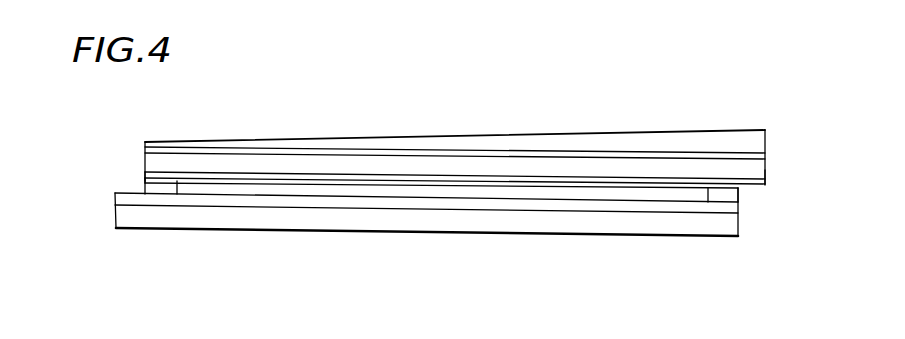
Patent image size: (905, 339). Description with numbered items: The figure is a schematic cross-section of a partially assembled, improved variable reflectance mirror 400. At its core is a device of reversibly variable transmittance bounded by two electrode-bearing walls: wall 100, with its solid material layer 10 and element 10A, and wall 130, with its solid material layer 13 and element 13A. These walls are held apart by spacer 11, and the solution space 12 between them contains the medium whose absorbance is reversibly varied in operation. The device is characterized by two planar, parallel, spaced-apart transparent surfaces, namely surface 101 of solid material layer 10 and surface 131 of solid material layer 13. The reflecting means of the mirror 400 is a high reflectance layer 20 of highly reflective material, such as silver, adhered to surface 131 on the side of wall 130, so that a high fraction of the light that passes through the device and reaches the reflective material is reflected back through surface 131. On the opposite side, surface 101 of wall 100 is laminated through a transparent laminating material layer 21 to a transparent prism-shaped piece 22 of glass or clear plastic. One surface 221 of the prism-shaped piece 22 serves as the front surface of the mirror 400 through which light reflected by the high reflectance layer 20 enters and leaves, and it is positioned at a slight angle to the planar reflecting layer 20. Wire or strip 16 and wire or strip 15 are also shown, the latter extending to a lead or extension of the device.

The variable reflectance mirror 400 is at (520, 248).
The wall 100 is at (130, 150).
The surface of prism-shaped piece 221 is at (765, 130).
The prism-shaped piece 22 is at (766, 142).
The transparent laminating material layer 21 is at (767, 150).
The surface of solid material layer 101 is at (767, 158).
The solid material layer 10 is at (767, 162).
The element of wall 100 10A is at (767, 170).
The wire or strip 16 is at (133, 193).
The wire or strip 15 is at (746, 186).
The spacer 11 is at (127, 174).
The high reflectance layer 20 is at (730, 238).
The solution space 12 is at (206, 190).
The element of wall 130 13A is at (740, 206).
The solid material layer 13 is at (740, 222).
The wall 130 is at (115, 209).
The surface of solid material layer 131 is at (740, 237).